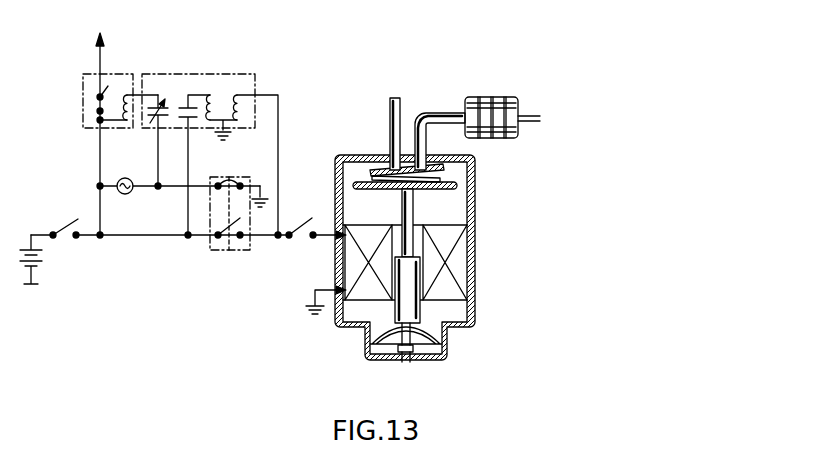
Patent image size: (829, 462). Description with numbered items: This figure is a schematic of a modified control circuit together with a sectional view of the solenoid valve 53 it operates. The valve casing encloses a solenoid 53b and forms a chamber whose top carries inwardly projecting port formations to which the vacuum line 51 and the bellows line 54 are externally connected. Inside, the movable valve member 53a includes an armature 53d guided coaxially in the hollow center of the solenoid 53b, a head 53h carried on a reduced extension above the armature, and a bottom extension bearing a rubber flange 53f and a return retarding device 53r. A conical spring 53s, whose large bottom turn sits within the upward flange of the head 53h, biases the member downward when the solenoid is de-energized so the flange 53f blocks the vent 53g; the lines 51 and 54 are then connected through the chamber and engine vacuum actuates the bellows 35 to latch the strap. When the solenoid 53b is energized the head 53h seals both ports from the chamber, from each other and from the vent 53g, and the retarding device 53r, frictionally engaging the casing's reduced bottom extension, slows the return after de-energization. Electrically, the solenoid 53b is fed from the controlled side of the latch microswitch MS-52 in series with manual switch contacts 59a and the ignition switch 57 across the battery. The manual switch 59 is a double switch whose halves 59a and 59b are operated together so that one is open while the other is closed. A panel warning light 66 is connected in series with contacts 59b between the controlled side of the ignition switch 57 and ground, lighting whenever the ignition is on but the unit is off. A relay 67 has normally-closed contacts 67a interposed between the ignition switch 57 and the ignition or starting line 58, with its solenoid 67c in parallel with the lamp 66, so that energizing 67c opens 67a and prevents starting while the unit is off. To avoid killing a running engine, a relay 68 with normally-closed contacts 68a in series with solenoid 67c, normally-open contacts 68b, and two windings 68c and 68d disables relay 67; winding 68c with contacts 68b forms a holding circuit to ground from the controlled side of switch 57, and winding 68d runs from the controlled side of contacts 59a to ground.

The controlled ignition line and/or starting line 58 is at (100, 62).
The relay 67 is at (110, 73).
The normally-closed contacts 67a is at (100, 110).
The solenoid 67c is at (125, 122).
The relay 68 is at (257, 75).
The normally-closed contacts 68a is at (162, 104).
The normally-open contacts 68b is at (190, 99).
The solenoid winding 68c is at (216, 108).
The solenoid winding 68d is at (240, 110).
The panel warning light 66 is at (121, 194).
The ignition switch 57 is at (78, 219).
The manual switch 59 is at (212, 252).
The manual switch contacts 59a is at (228, 224).
The manual switch contacts 59b is at (232, 181).
The microswitch MS- 52 is at (303, 240).
The valve 53 is at (426, 248).
The movable valve member 53a is at (446, 213).
The solenoid 53b is at (460, 258).
The head 53h is at (462, 186).
The conical spring 53s is at (450, 170).
The armature 53d is at (418, 315).
The return retarding device 53r is at (430, 347).
The flange 53f is at (400, 350).
The vent 53g is at (407, 362).
The vacuum line 51 is at (400, 110).
The bellows line 54 is at (442, 113).
The bellows 35 is at (500, 97).